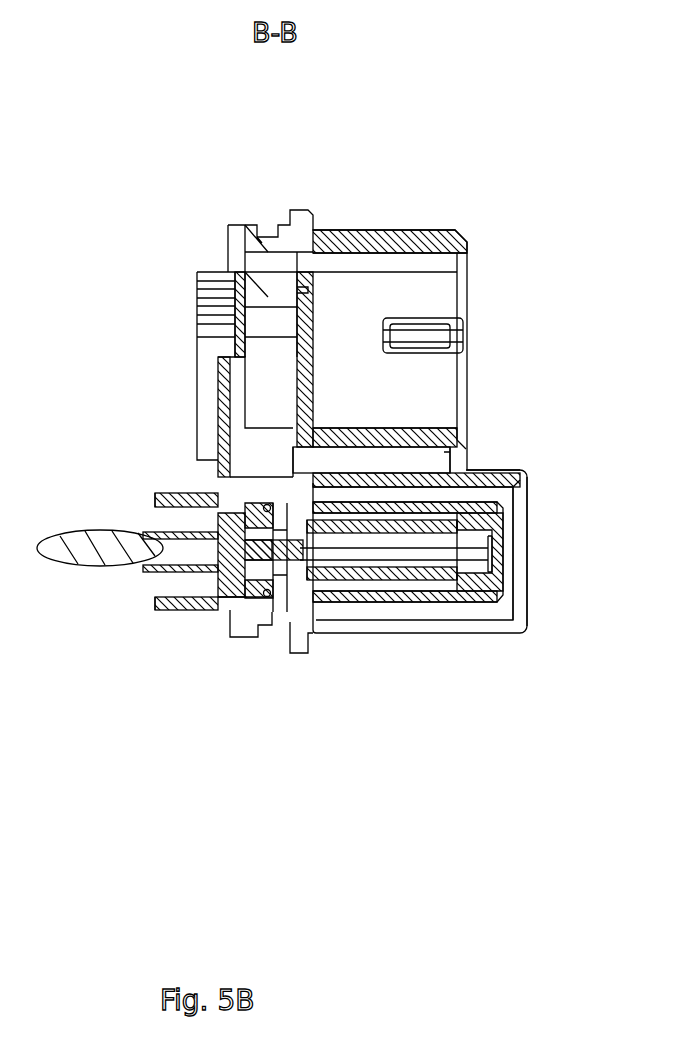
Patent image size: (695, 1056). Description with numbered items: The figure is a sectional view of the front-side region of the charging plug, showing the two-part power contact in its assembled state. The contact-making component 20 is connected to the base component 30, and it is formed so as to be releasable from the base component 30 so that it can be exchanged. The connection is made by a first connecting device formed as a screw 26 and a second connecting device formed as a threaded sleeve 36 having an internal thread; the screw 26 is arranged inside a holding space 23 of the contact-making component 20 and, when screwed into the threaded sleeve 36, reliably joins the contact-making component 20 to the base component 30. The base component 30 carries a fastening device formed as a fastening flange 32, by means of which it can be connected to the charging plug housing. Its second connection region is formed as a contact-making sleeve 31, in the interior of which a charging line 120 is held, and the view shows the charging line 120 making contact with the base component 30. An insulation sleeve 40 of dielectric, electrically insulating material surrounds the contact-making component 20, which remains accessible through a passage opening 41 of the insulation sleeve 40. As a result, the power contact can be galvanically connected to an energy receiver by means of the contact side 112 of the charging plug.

The contact-making component 20 is at (370, 572).
The holding space 23 is at (418, 560).
The screw 26 is at (278, 612).
The base component 30 is at (237, 575).
The contact-making sleeve 31 is at (160, 532).
The fastening flange 32 is at (244, 602).
The threaded sleeve 36 is at (235, 508).
The insulation sleeve 40 is at (478, 592).
The passage opening 41 is at (502, 543).
The contact side 112 is at (535, 605).
The charging line 120 is at (127, 550).